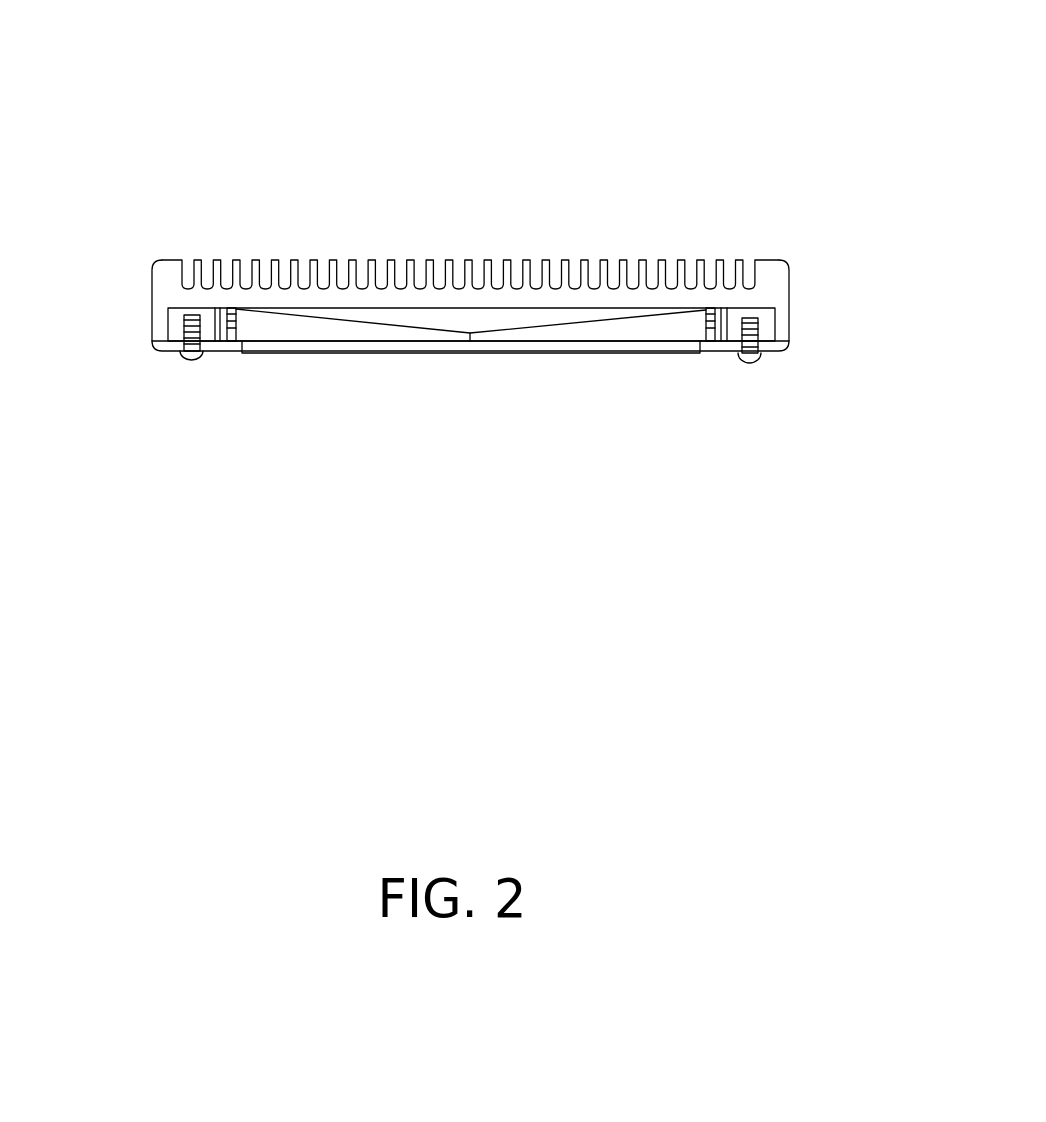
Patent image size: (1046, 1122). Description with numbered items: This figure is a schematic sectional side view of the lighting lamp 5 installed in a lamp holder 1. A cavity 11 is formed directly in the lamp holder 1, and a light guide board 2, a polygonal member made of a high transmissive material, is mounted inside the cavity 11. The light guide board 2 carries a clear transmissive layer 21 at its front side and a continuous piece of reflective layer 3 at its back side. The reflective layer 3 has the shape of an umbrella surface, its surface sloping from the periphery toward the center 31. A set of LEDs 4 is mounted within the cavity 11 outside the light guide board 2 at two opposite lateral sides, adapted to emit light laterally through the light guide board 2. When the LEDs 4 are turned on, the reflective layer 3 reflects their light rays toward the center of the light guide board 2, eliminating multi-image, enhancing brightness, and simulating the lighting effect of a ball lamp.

The lamp holder 1 is at (788, 262).
The cavity 11 is at (187, 307).
The light guide board 2 is at (334, 352).
The clear transmissive layer 21 is at (616, 333).
The reflective layer 3 is at (297, 315).
The center 31 is at (470, 332).
The LEDs 4 is at (230, 322).
The lighting lamp 5 is at (585, 182).